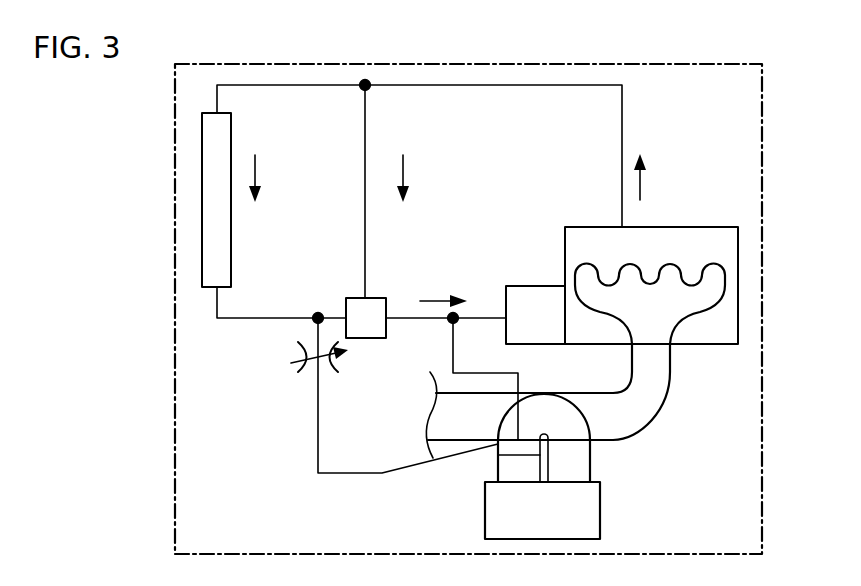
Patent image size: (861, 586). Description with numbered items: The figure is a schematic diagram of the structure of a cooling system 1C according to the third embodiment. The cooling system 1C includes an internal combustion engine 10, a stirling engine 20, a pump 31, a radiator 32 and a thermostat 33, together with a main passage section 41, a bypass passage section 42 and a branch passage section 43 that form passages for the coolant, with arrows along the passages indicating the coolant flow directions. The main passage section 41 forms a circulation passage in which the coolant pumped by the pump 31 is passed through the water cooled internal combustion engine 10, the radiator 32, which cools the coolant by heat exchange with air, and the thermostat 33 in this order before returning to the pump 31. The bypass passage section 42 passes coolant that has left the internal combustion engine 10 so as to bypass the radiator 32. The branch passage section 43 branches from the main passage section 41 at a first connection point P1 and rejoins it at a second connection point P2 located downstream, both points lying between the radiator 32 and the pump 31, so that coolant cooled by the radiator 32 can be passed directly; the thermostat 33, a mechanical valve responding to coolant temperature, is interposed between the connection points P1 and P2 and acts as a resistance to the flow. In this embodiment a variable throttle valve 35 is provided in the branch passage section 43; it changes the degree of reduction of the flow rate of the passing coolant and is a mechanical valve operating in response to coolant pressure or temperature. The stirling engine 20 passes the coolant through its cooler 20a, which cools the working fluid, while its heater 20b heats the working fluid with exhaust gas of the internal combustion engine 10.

The cooling system 1C is at (175, 118).
The internal combustion engine 10 is at (690, 227).
The stirling engine 20 is at (600, 510).
The cooler 20a is at (497, 450).
The heater 20b is at (577, 417).
The pump 31 is at (537, 286).
The radiator 32 is at (231, 245).
The thermostat 33 is at (354, 298).
The variable throttle valve 35 is at (302, 372).
The main passage section 41 is at (622, 118).
The bypass passage section 42 is at (365, 118).
The branch passage section 43 is at (318, 428).
The first connection point P1 is at (315, 321).
The second connection point P2 is at (453, 324).